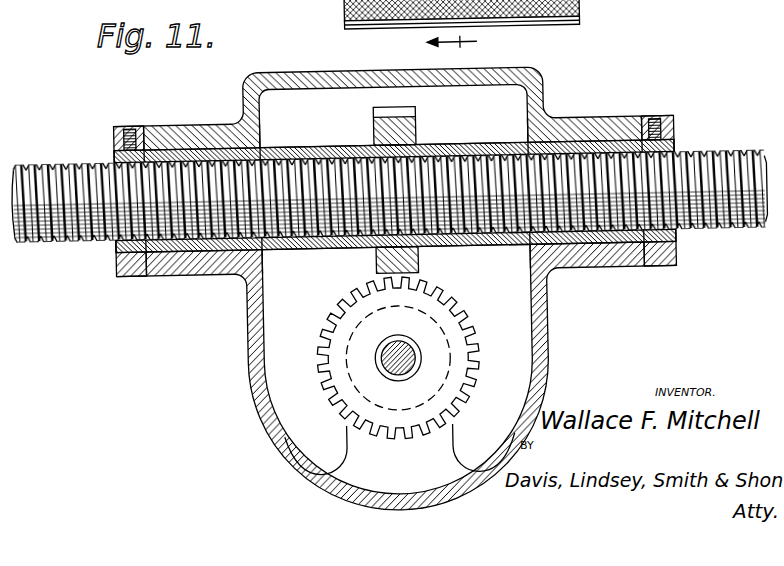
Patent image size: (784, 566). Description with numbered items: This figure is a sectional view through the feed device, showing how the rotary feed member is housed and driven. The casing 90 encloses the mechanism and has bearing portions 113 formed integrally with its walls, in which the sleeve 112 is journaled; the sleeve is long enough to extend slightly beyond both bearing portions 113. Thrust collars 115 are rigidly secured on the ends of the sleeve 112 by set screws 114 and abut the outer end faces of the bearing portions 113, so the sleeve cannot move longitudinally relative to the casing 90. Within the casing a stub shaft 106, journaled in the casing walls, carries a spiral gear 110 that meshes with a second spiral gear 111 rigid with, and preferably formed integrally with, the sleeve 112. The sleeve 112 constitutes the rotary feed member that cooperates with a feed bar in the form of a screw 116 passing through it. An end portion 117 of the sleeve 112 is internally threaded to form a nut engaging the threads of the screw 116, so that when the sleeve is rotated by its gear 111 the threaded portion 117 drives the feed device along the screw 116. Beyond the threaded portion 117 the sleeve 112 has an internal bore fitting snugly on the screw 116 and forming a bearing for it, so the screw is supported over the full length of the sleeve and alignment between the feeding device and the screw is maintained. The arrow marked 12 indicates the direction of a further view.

The direction of view indicator for Fig. 12 is at (520, 55).
The casing 90 is at (567, 131).
The stub shaft 106 is at (398, 352).
The spiral gear 110 is at (449, 354).
The second spiral gear 111 is at (416, 127).
The sleeve 112 is at (308, 145).
The bearing portions 113 is at (186, 121).
The set screws 114 is at (133, 122).
The thrust collars 115 is at (116, 145).
The screw 116 is at (77, 236).
The end portion 117 is at (198, 238).